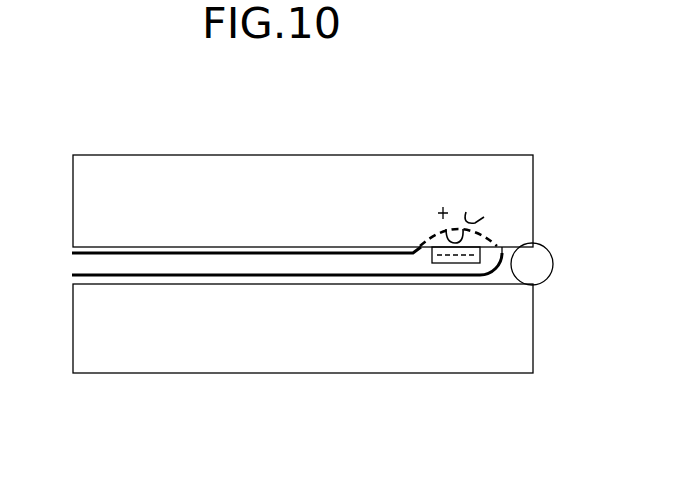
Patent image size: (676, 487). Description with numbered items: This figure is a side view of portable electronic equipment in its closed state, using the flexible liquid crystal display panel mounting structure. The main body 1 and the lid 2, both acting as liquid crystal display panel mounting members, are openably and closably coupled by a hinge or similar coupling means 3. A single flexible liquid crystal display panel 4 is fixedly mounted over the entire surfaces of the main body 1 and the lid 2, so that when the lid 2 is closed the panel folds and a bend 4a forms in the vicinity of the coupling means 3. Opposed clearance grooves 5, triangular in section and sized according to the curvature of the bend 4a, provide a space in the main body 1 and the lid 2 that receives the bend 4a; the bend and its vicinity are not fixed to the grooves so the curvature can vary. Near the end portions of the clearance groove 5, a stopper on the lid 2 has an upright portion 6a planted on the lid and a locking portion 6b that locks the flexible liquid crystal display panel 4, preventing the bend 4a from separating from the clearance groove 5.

The main body 1 is at (185, 362).
The lid 2 is at (369, 176).
The coupling means 3 is at (553, 263).
The flexible liquid crystal display panel 4 is at (216, 250).
The bend 4a is at (403, 243).
The clearance grooves 5 is at (482, 216).
The upright portion 6a is at (473, 247).
The locking portion 6b is at (476, 262).